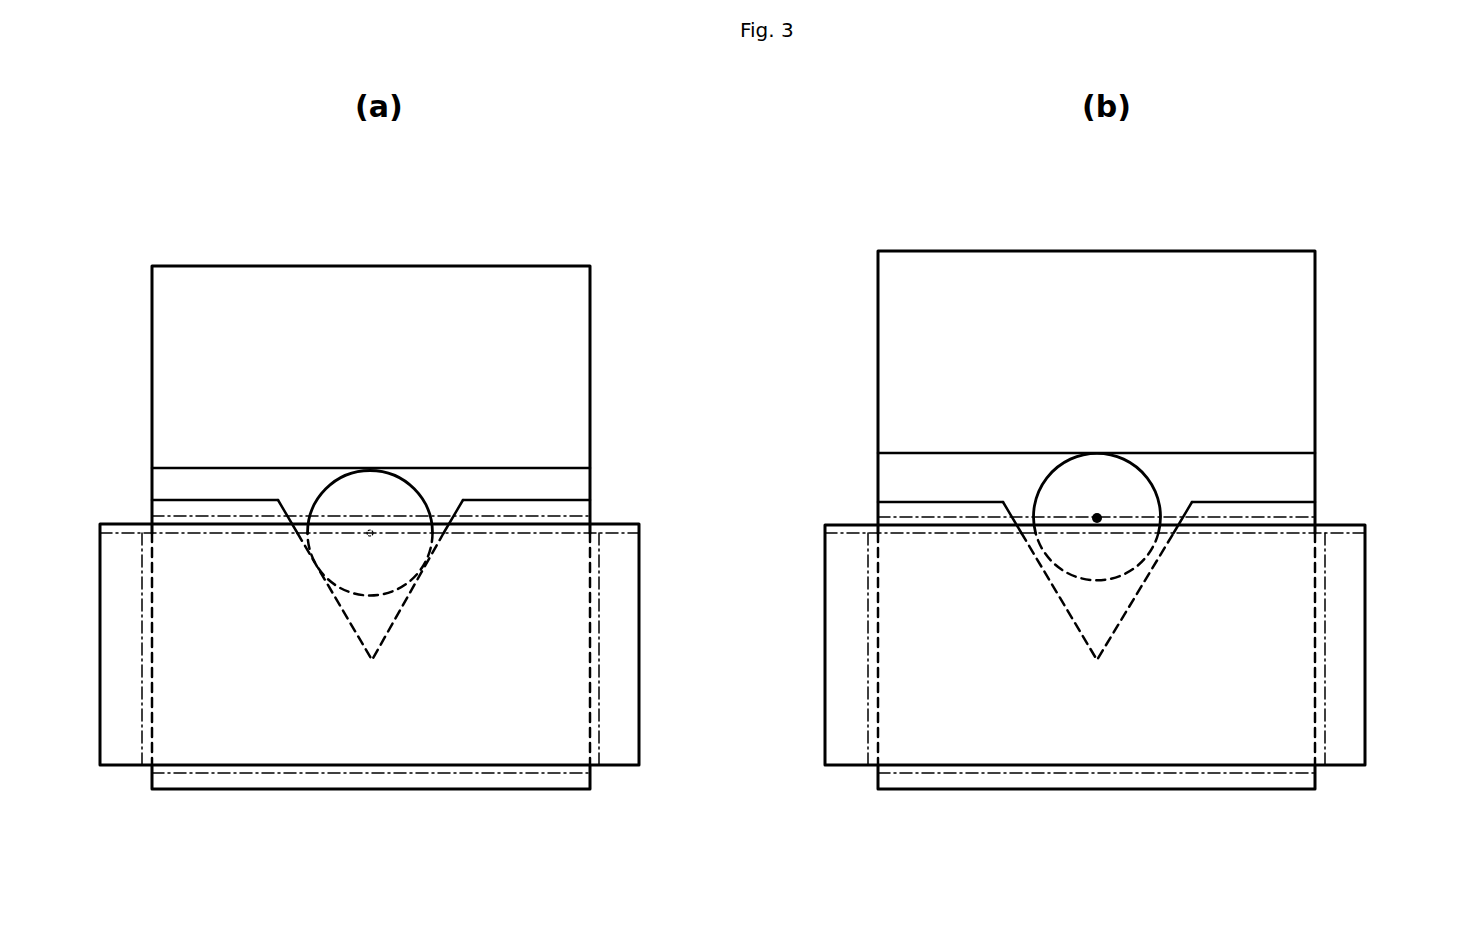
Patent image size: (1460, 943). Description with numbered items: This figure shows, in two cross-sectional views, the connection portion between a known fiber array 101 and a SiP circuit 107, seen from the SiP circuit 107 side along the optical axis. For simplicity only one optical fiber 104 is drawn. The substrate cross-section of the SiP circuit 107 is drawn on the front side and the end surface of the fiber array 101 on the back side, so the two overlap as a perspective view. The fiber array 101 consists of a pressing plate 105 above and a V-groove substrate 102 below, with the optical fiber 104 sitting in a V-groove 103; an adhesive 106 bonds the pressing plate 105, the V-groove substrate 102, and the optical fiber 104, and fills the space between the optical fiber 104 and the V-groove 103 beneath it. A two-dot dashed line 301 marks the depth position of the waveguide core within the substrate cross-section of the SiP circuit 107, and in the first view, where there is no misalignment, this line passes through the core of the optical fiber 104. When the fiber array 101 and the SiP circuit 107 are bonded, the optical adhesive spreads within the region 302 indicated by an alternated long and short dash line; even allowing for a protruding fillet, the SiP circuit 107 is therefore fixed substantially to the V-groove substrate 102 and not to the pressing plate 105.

The fiber array 101 is at (531, 250).
The V-groove substrate 102 is at (367, 780).
The V-groove 103 is at (403, 612).
The optical fiber 104 is at (393, 497).
The pressing plate 105 is at (577, 380).
The adhesive 106 is at (577, 485).
The SiP circuit 107 is at (640, 665).
The two-dot dashed line 301 is at (610, 537).
The optical adhesive region 302 is at (602, 612).